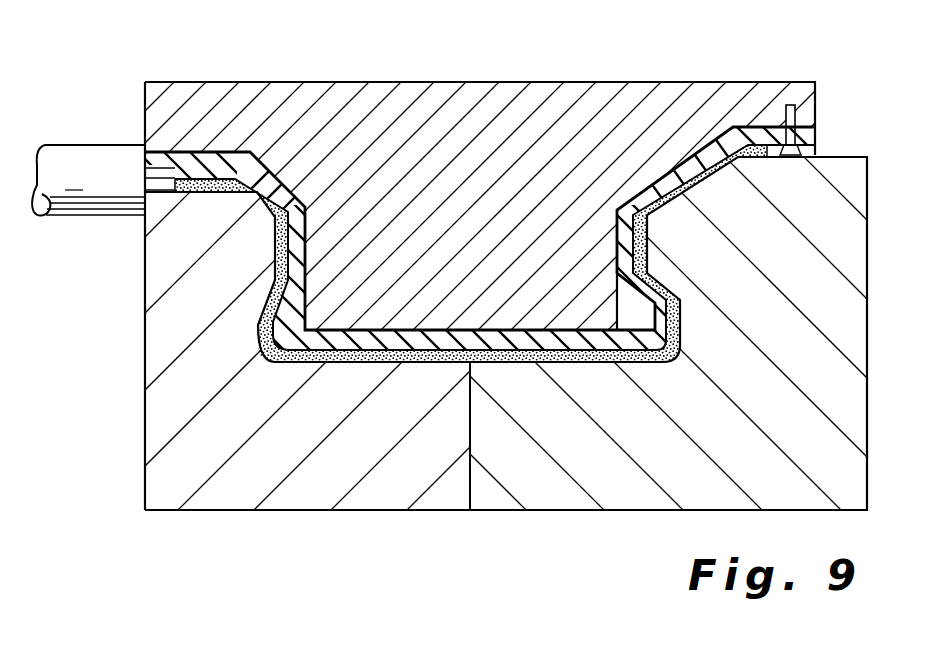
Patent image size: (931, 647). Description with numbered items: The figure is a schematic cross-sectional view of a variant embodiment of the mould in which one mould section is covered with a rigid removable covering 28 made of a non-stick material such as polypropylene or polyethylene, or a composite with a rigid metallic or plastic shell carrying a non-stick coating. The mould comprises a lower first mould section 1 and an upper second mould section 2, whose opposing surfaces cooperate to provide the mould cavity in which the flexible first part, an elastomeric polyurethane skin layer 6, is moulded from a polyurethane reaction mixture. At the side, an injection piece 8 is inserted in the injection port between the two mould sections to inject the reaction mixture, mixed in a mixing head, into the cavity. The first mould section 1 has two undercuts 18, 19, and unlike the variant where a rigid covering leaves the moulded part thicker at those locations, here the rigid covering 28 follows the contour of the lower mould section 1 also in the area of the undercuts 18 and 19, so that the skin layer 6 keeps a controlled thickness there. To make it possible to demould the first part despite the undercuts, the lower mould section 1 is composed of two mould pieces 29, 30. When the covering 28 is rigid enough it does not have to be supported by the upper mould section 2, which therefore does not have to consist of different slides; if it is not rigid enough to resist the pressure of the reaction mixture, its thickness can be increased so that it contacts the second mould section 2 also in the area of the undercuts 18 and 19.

The first mould section 1 is at (465, 323).
The second mould section 2 is at (618, 81).
The skin layer 6 is at (708, 177).
The injection piece 8 is at (93, 202).
The undercut 18 is at (257, 348).
The undercut 19 is at (683, 326).
The removable covering 28 is at (485, 338).
The mould piece 29 is at (311, 486).
The mould piece 30 is at (638, 487).